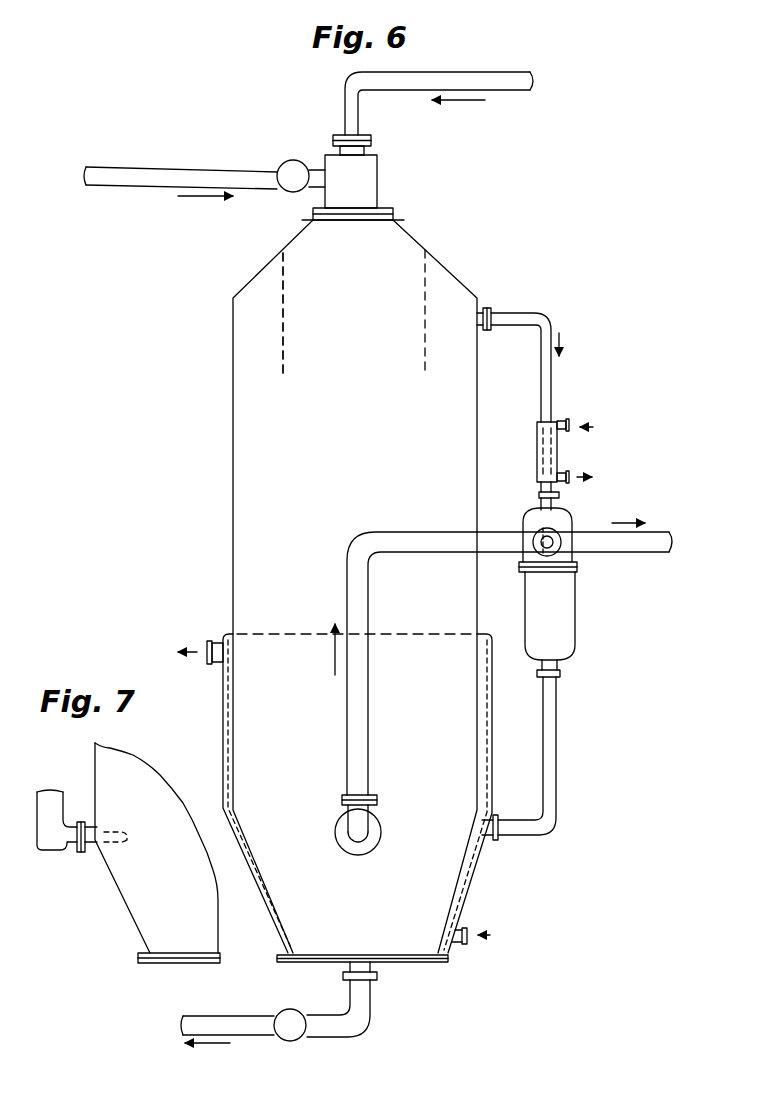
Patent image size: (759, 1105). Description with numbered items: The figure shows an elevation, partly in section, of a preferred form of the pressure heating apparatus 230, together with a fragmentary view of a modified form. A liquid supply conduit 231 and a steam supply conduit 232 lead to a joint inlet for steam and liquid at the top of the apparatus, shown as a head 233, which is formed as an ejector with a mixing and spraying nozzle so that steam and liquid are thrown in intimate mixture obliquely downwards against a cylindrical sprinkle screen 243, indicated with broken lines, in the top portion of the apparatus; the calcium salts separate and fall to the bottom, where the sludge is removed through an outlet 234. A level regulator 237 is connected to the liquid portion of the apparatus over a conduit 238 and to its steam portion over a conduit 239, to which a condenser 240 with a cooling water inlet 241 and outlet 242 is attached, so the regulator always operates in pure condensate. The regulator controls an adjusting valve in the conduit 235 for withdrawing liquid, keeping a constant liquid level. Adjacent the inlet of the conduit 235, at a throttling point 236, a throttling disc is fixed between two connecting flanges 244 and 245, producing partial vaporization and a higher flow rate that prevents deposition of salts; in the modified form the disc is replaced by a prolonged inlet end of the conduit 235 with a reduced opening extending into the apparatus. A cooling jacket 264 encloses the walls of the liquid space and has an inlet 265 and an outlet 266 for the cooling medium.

In FIG. 6, the pressure heating apparatus 230 is at (233, 516).
In FIG. 7, the pressure heating apparatus 230 is at (125, 893).
In FIG. 6, the liquid supply conduit 231 is at (201, 162).
In FIG. 6, the steam supply conduit 232 is at (463, 64).
In FIG. 6, the head box 233 is at (379, 183).
In FIG. 6, the outlet 234 is at (268, 1038).
In FIG. 6, the conduit for withdrawing liquid 235 is at (653, 532).
In FIG. 7, the conduit for withdrawing liquid 235 is at (37, 805).
In FIG. 6, the throttling disc 236 is at (378, 802).
In FIG. 6, the level regulator 237 is at (577, 610).
In FIG. 6, the conduit 238 is at (557, 727).
In FIG. 6, the conduit 239 is at (552, 374).
In FIG. 6, the condenser 240 is at (537, 455).
In FIG. 6, the inlet 241 is at (566, 420).
In FIG. 6, the outlet 242 is at (566, 481).
In FIG. 6, the cylindrical sprinkle screen 243 is at (284, 344).
In FIG. 6, the connecting flange 244 is at (340, 800).
In FIG. 6, the connecting flange 245 is at (337, 812).
In FIG. 6, the cooling jacket 264 is at (223, 728).
In FIG. 6, the inlet 265 is at (466, 928).
In FIG. 6, the outlet 266 is at (211, 640).